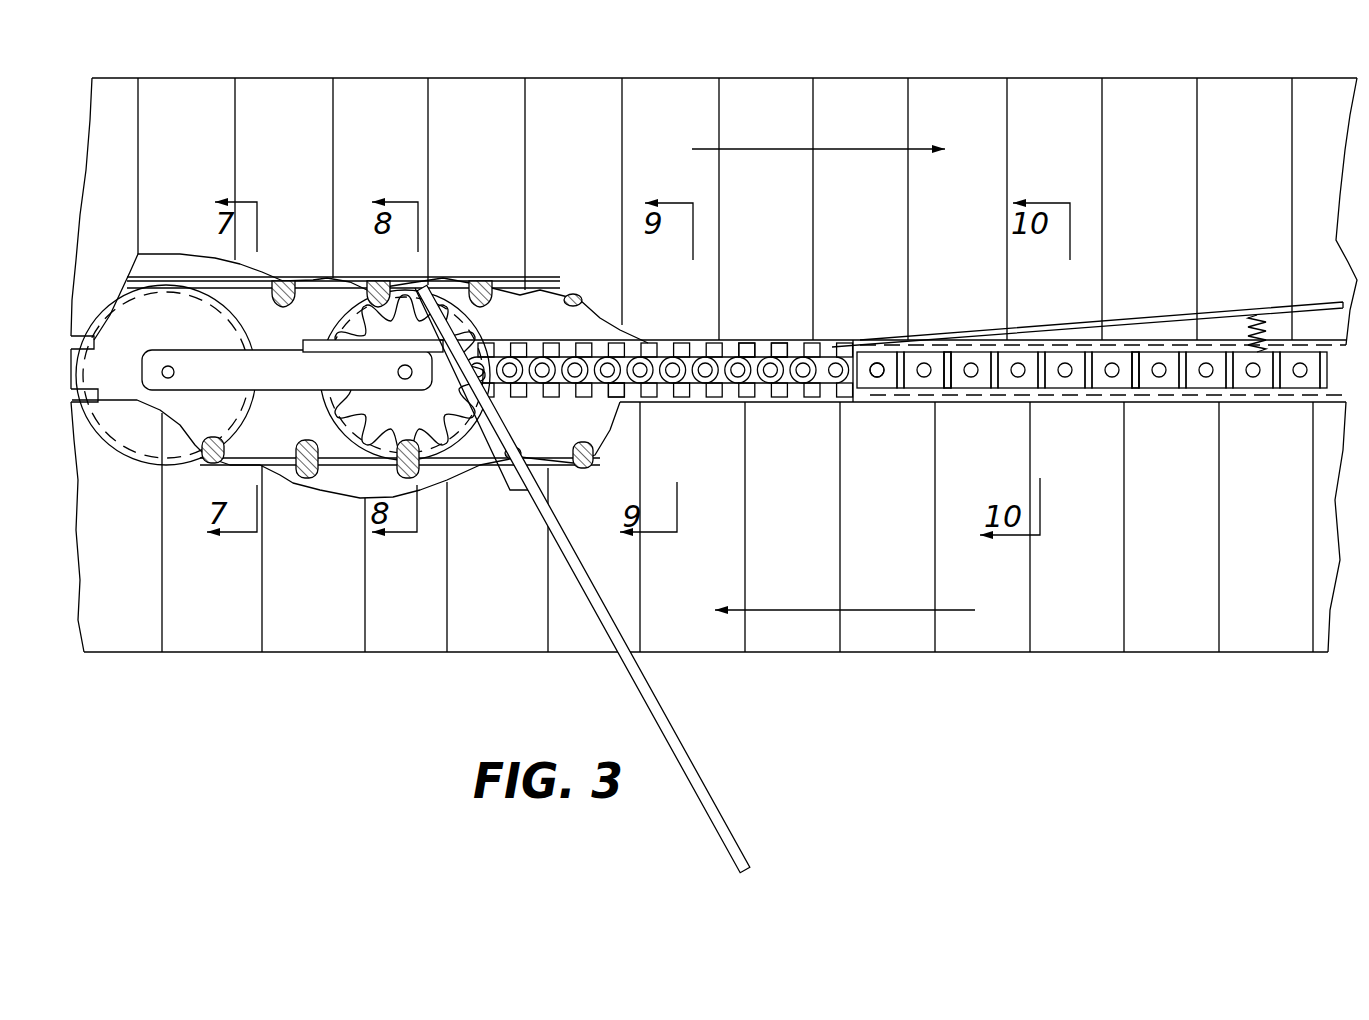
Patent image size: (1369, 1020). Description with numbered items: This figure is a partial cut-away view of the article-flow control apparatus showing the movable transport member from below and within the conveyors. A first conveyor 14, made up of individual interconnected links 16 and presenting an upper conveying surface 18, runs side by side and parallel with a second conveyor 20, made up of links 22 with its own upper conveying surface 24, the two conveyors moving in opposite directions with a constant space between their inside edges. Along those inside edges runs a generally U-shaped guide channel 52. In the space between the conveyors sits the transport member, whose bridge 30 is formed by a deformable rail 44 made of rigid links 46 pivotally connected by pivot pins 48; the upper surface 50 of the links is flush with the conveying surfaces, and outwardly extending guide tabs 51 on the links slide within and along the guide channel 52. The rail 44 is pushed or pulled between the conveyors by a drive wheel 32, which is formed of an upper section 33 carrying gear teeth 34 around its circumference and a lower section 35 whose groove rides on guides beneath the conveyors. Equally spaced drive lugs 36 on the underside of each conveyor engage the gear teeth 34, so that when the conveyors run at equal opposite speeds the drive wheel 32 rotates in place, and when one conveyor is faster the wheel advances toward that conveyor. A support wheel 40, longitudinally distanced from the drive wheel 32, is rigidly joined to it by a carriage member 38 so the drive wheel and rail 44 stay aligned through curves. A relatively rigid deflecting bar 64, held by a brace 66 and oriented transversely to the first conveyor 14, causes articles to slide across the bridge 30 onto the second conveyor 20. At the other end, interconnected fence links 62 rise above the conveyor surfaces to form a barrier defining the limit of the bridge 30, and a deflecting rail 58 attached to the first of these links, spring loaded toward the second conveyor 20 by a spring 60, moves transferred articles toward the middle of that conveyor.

The first conveyor 14 is at (890, 652).
The links 16 is at (1075, 620).
The upper conveying surface 18 is at (1165, 578).
The second conveyor 20 is at (843, 78).
The links 22 is at (572, 125).
The upper conveying surface 24 is at (1052, 133).
The bridge 30 is at (895, 385).
The drive wheel 32 is at (430, 300).
The upper section 33 is at (428, 455).
The gear teeth 34 is at (335, 300).
The lower section 35 is at (337, 307).
The drive lugs 36 is at (466, 292).
The carriage member 38 is at (283, 392).
The support wheel 40 is at (190, 400).
The deformable rail member 44 is at (673, 383).
The links 46 is at (745, 343).
The pivot pins 48 is at (772, 345).
The upper surface 50 is at (627, 387).
The guide tabs 51 is at (584, 340).
The guide channel 52 is at (828, 343).
The deflecting rail 58 is at (1250, 333).
The spring 60 is at (1243, 336).
The fence links 62 is at (958, 395).
The deflecting bar 64 is at (677, 737).
The brace 66 is at (356, 347).